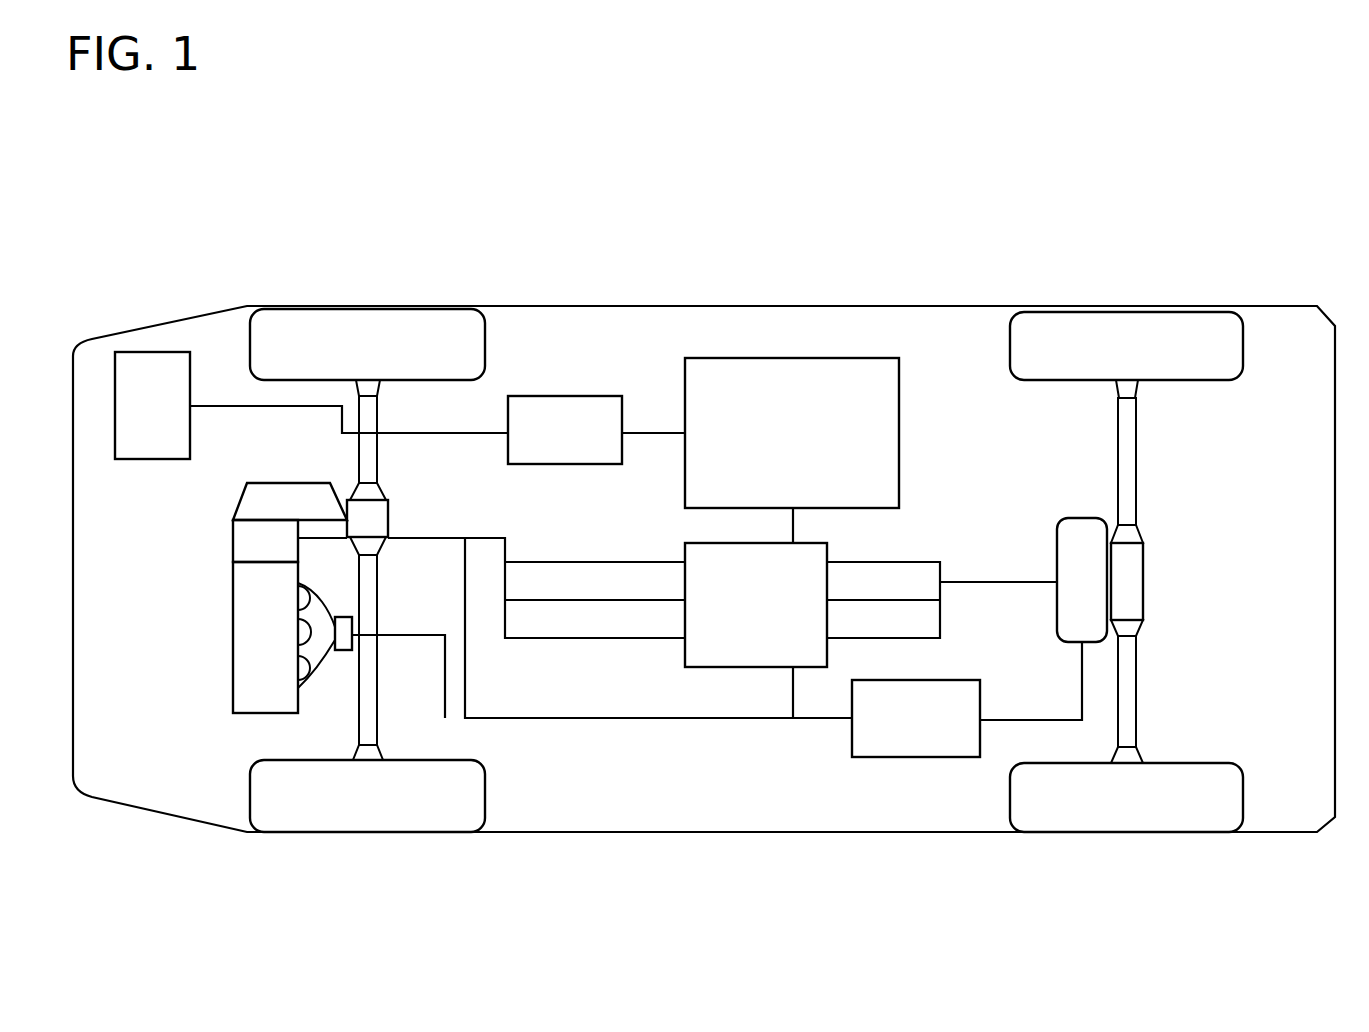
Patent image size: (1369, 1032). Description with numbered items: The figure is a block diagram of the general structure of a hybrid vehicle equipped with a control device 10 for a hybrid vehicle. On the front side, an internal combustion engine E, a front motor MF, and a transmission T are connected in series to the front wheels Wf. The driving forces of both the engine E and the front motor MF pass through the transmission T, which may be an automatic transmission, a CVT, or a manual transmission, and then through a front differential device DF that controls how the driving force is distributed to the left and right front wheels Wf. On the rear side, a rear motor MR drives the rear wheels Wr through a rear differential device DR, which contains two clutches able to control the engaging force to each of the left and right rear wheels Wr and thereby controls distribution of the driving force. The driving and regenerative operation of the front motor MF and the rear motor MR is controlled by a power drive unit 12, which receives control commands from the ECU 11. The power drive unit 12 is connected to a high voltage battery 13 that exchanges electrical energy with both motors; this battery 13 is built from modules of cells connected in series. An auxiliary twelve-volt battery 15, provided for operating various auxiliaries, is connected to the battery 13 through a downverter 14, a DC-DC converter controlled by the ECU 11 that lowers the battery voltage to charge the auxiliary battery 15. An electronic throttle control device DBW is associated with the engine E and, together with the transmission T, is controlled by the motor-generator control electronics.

The control device for a hybrid vehicle 10 is at (1010, 157).
The ECU 11 is at (852, 745).
The power drive unit 12 is at (685, 656).
The high voltage battery 13 is at (899, 433).
The downverter 14 is at (568, 395).
The auxiliary 12-volt battery 15 is at (154, 462).
The front wheels Wf is at (371, 320).
The rear wheels Wr is at (1126, 325).
The front differential device DF is at (390, 520).
The rear differential device DR is at (1143, 578).
The front motor MF is at (265, 541).
The rear motor MR is at (1082, 580).
The internal combustion engine E is at (265, 637).
The transmission T is at (290, 501).
The electronic throttle control device DBW is at (340, 655).